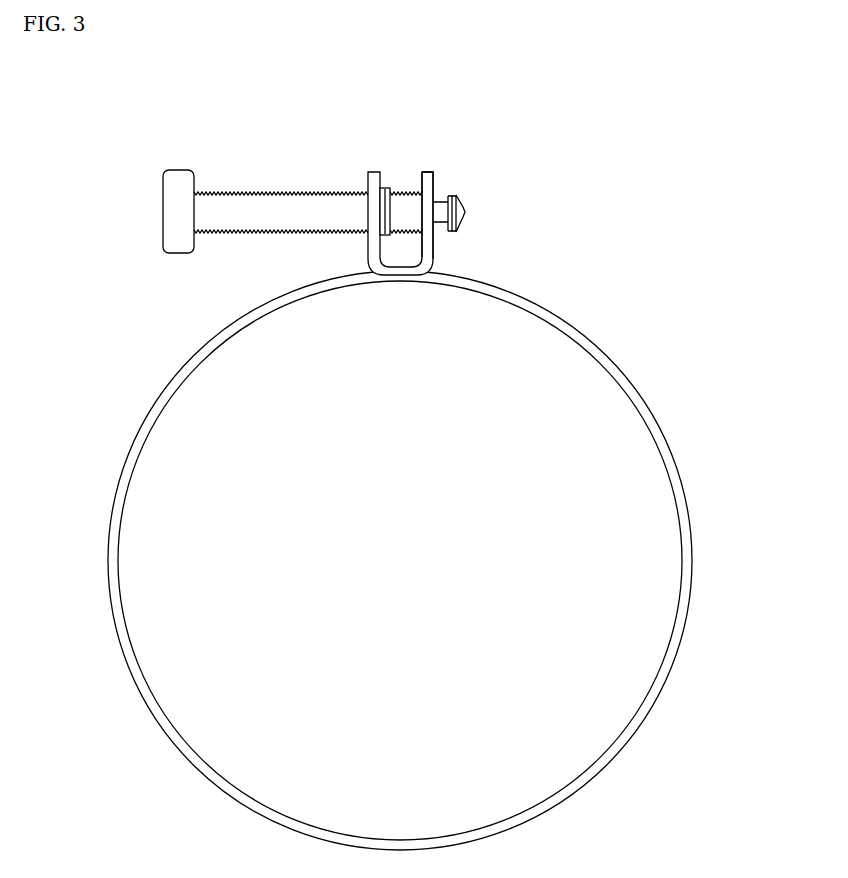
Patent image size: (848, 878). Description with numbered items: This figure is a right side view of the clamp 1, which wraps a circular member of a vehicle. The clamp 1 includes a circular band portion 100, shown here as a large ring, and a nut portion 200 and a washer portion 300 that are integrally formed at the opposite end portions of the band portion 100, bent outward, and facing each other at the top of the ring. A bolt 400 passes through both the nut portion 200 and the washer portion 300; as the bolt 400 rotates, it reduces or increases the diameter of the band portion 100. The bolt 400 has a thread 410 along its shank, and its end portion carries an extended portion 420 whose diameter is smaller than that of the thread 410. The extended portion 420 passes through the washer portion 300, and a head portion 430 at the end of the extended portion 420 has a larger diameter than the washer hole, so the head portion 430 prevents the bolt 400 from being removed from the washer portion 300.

The clamp 1 is at (598, 340).
The band portion 100 is at (686, 552).
The nut portion 200 is at (373, 172).
The washer portion 300 is at (427, 172).
The bolt 400 is at (178, 212).
The thread 410 is at (265, 193).
The extended portion 420 is at (437, 205).
The head portion 430 is at (468, 212).